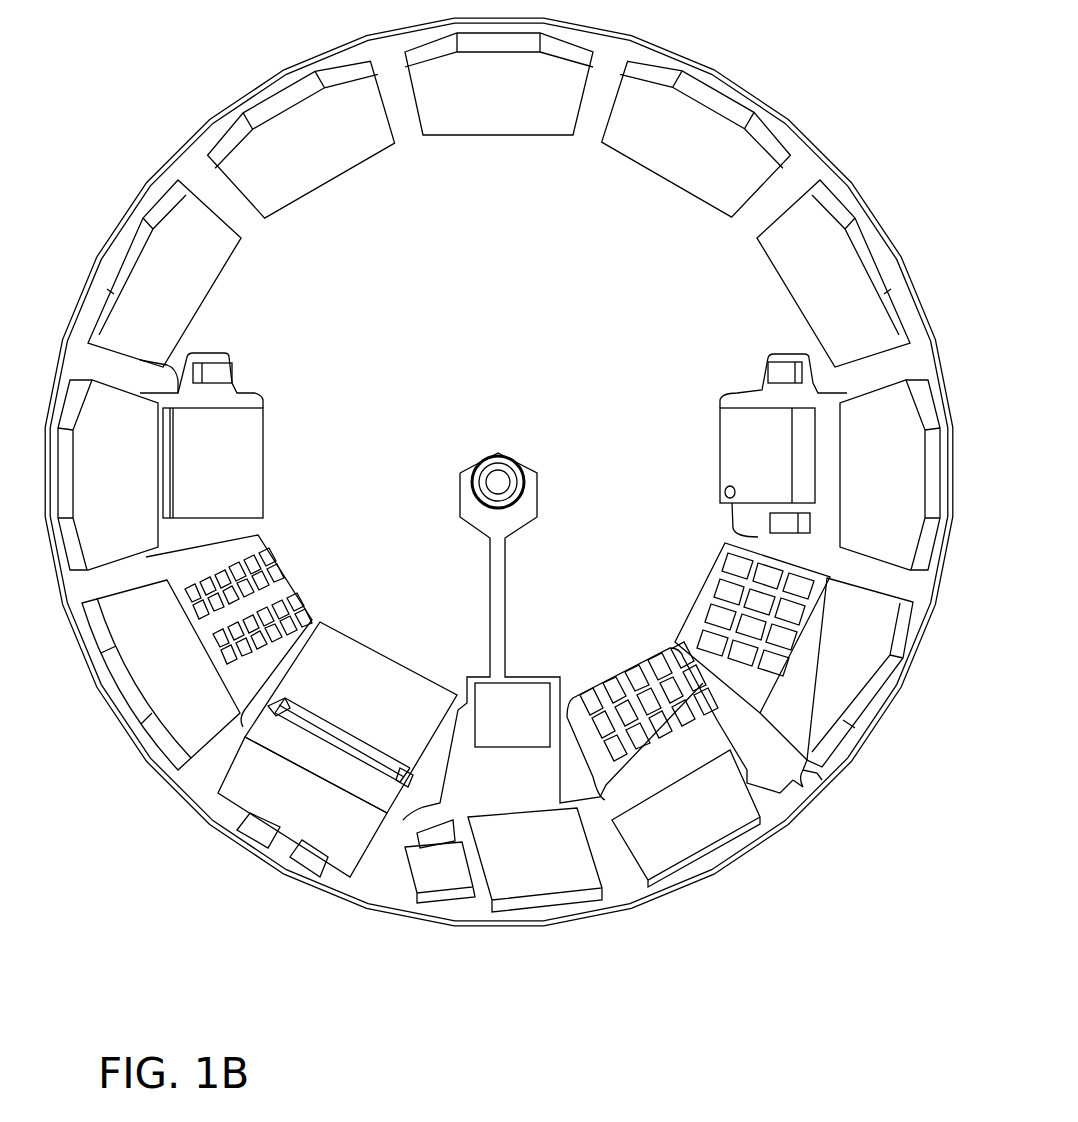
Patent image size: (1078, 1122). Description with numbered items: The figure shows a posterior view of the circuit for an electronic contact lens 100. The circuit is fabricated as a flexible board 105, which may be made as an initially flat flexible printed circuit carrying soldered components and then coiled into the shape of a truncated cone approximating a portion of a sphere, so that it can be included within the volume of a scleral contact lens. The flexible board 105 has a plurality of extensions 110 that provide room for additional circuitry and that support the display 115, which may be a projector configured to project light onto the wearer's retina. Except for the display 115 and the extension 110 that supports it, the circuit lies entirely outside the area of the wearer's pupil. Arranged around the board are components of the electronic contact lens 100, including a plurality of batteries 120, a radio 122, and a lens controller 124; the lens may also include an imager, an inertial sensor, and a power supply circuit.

The electronic contact lens 100 is at (82, 126).
The flexible board 105 is at (735, 870).
The extensions 110 is at (255, 393).
The display 115 is at (523, 466).
The batteries 120 is at (333, 188).
The radio 122 is at (720, 443).
The lens controller 124 is at (265, 437).